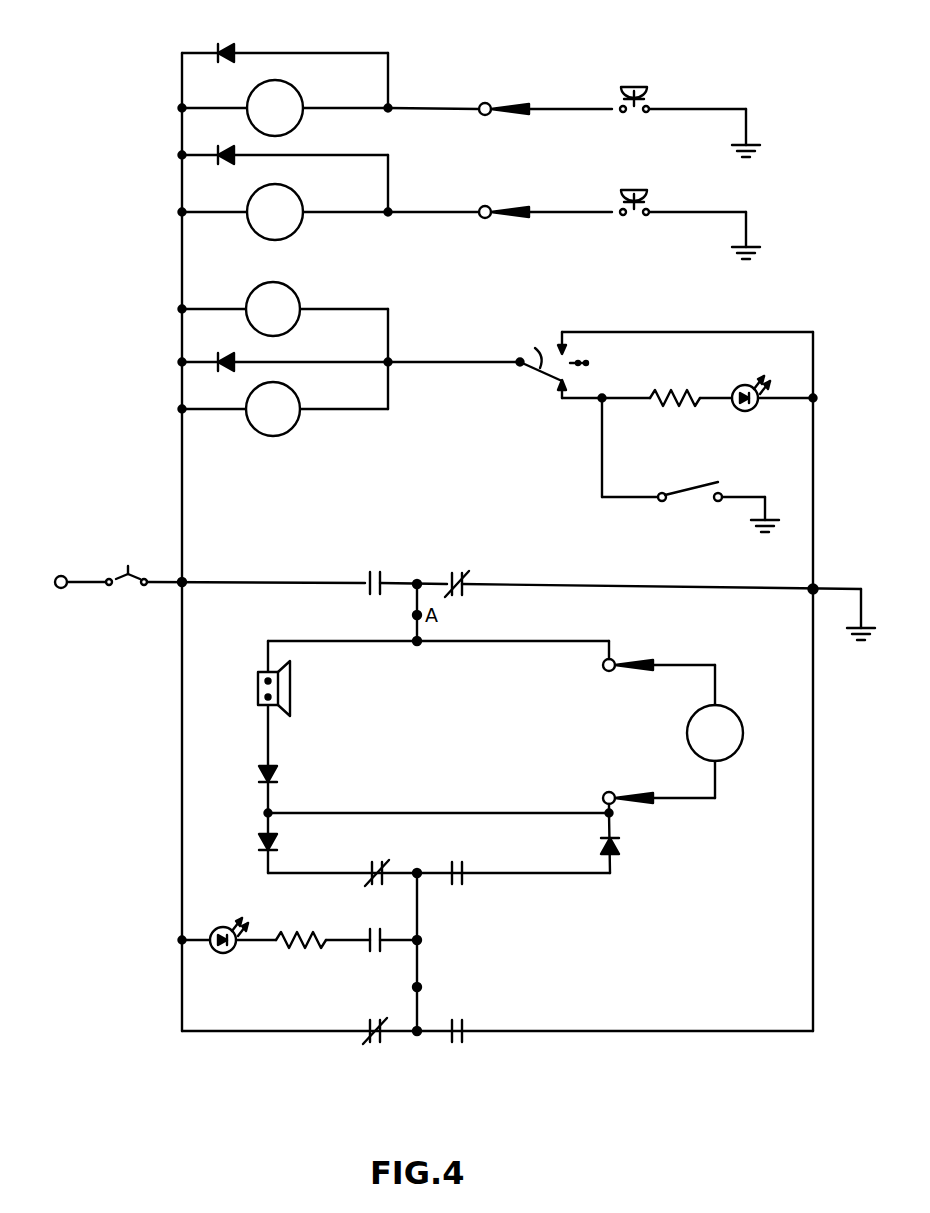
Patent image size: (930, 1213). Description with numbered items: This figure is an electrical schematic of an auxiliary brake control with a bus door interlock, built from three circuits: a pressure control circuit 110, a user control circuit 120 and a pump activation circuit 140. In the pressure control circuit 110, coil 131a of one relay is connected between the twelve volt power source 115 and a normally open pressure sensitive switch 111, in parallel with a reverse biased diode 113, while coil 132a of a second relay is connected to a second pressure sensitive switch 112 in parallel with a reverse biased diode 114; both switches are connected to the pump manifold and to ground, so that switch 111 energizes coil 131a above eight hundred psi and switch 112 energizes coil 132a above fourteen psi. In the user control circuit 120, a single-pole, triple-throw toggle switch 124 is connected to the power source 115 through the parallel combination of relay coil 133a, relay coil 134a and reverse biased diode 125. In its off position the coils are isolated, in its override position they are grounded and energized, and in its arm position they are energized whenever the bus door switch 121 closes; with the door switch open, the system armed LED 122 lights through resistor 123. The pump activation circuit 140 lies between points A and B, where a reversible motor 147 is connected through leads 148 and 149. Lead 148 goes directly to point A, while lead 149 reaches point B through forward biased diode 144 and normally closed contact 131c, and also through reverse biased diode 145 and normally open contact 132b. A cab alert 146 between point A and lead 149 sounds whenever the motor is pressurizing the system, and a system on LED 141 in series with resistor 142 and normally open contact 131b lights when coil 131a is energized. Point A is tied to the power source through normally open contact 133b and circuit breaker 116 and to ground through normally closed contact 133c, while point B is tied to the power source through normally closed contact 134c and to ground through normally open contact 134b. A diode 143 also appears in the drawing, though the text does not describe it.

The pressure control circuit 110 is at (152, 144).
The normally open pressure sensitive switch 111 is at (640, 86).
The normally open pressure sensitive switch 112 is at (640, 189).
The reverse biased 1N4004 diode 113 is at (232, 47).
The reverse biased 1N4004 diode 114 is at (231, 147).
The 12 V power source 115 is at (61, 575).
The 15 amp circuit breaker 116 is at (128, 570).
The user control circuit 120 is at (152, 384).
The bus door switch 121 is at (683, 493).
The system armed LED 122 is at (753, 409).
The 1 KΩ ½W resistor 123 is at (665, 396).
The single-pole, triple-throw toggle switch 124 is at (566, 381).
The reverse biased 1N4004 diode 125 is at (232, 354).
The coil of relay 131 131a is at (296, 90).
The normally open contact of relay 131 131b is at (368, 933).
The normally closed contact of relay 131 131c is at (370, 863).
The coil of relay 132 132a is at (296, 194).
The normally open contact of relay 132 132b is at (463, 868).
The coil of relay 133 133a is at (294, 294).
The normally open contact of relay 133 133b is at (367, 575).
The normally closed contact of relay 133 133c is at (456, 575).
The coil of relay 134 134a is at (294, 394).
The normally open contact of relay 134 134b is at (464, 1023).
The normally closed contact of relay 134 134c is at (368, 1023).
The pump activation circuit 140 is at (147, 800).
The system on LED 141 is at (210, 953).
The 1 KΩ ½W resistor 142 is at (291, 950).
The diode 143 is at (273, 776).
The forward biased 1N3493R diode 144 is at (258, 835).
The reverse biased 1N3493R diode 145 is at (620, 856).
The cab alert 146 is at (257, 687).
The reversible motor 147 is at (735, 715).
The motor lead 148 is at (603, 670).
The motor lead 149 is at (603, 797).